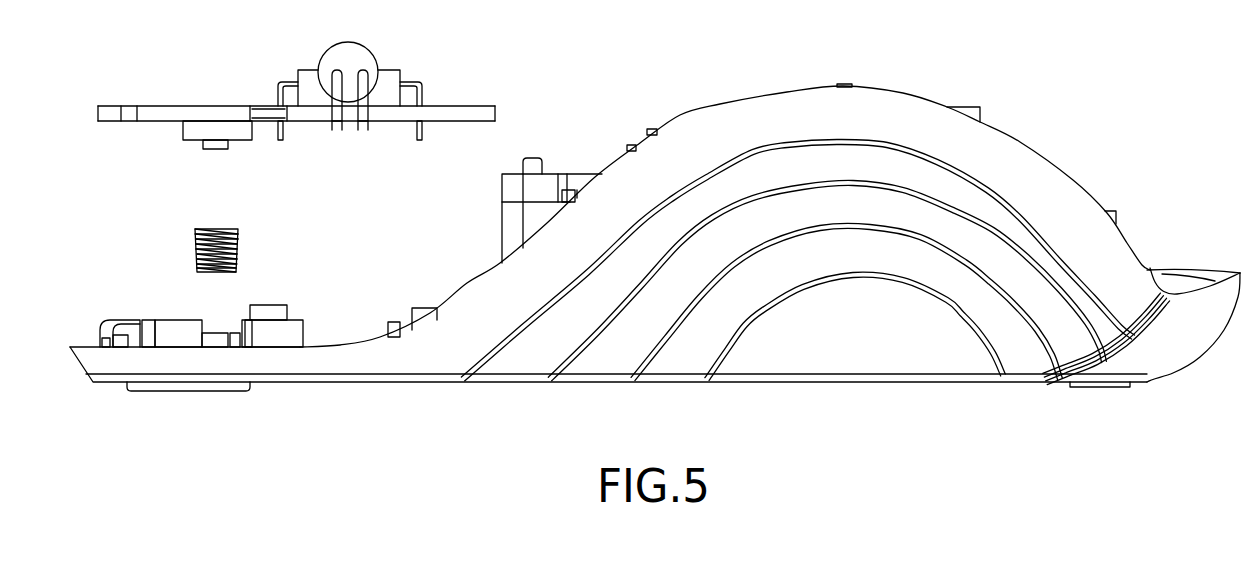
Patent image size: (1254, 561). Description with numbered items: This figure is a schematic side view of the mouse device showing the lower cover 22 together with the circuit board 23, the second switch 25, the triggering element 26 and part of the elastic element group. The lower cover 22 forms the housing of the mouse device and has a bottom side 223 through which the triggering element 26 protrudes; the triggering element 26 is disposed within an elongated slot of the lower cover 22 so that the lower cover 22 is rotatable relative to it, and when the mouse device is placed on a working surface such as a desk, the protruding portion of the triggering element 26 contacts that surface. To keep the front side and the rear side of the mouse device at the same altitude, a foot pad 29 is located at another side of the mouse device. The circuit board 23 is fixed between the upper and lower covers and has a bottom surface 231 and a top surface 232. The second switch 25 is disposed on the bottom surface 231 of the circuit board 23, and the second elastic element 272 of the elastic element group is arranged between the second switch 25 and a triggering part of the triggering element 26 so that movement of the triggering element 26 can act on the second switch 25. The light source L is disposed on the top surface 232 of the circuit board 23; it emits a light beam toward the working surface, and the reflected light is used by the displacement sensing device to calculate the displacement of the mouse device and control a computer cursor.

The lower cover 22 is at (1003, 152).
The bottom side 223 is at (808, 383).
The circuit board 23 is at (448, 99).
The bottom surface 231 is at (148, 123).
The top surface 232 is at (167, 103).
The second switch 25 is at (235, 128).
The triggering element 26 is at (185, 387).
The second elastic element 272 is at (208, 227).
The foot pad 29 is at (1112, 387).
The light source L is at (345, 53).